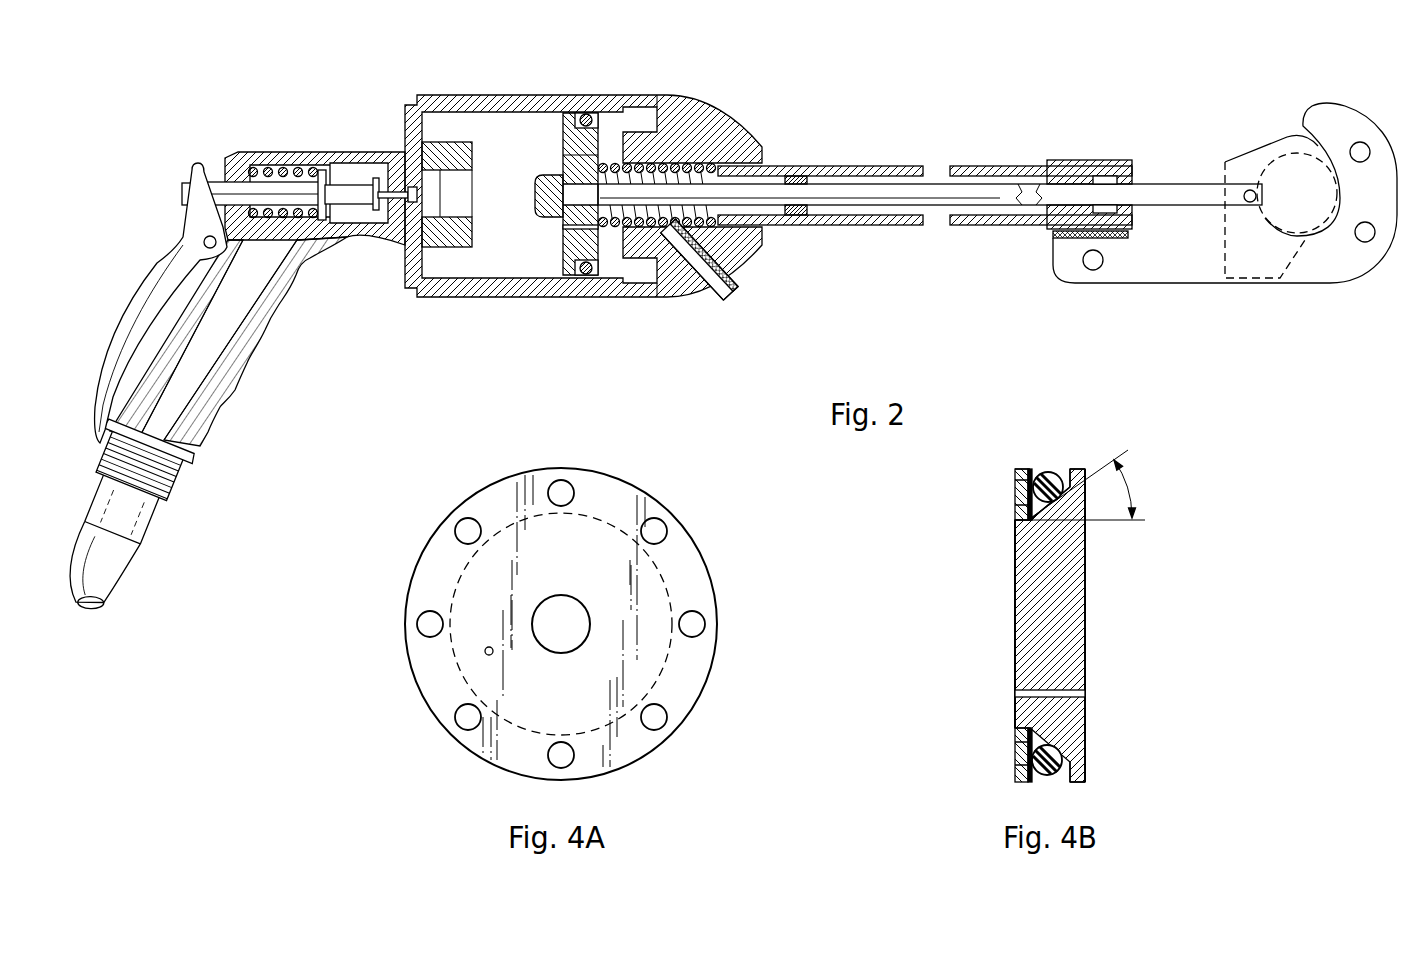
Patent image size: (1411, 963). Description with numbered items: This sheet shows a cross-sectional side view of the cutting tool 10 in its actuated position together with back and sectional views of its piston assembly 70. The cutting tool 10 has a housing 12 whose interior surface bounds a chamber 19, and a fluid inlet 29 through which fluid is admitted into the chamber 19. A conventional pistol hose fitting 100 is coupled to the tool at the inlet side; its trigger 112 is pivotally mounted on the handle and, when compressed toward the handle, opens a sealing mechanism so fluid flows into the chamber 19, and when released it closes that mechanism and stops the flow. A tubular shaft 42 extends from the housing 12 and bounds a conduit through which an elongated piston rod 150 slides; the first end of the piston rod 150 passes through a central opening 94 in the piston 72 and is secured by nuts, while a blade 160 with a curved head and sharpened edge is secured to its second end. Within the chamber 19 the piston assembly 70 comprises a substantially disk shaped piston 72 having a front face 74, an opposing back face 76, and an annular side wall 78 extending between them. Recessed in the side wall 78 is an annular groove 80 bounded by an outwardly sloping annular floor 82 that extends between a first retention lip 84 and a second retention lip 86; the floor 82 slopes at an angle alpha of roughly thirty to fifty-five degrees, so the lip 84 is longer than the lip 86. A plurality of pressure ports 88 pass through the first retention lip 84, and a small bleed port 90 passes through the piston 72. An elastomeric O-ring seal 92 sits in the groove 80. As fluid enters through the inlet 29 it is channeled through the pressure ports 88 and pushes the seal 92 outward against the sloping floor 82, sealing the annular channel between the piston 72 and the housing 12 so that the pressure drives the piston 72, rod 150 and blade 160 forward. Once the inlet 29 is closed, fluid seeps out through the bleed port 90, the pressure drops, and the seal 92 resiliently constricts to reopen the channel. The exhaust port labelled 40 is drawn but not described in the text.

In FIG. 2, the cutting tool 10 is at (717, 320).
In FIG. 2, the housing 12 is at (532, 97).
In FIG. 2, the chamber 19 is at (480, 258).
In FIG. 2, the fluid inlet 29 is at (457, 177).
In FIG. 2, the exhaust port 40 is at (707, 272).
In FIG. 2, the tubular shaft 42 is at (867, 227).
In FIG. 4A, the piston assembly 70 is at (586, 594).
In FIG. 4B, the piston assembly 70 is at (1061, 587).
In FIG. 2, the piston 72 is at (568, 172).
In FIG. 4A, the piston 72 is at (561, 624).
In FIG. 4B, the piston 72 is at (1068, 645).
In FIG. 4B, the front face 74 is at (1015, 597).
In FIG. 4B, the back face 76 is at (1088, 576).
In FIG. 4B, the annular side wall 78 is at (1072, 478).
In FIG. 4B, the annular groove 80 is at (1062, 475).
In FIG. 4B, the sloping annular floor 82 is at (1015, 512).
In FIG. 4B, the first retention lip 84 is at (1015, 477).
In FIG. 4B, the second retention lip 86 is at (1088, 468).
In FIG. 4A, the pressure ports 88 is at (565, 490).
In FIG. 4B, the pressure ports 88 is at (1015, 496).
In FIG. 2, the bleed port 90 is at (565, 228).
In FIG. 4A, the bleed port 90 is at (485, 651).
In FIG. 4B, the bleed port 90 is at (1015, 694).
In FIG. 2, the seal 92 is at (583, 280).
In FIG. 4B, the seal 92 is at (1046, 472).
In FIG. 4A, the central opening 94 is at (540, 623).
In FIG. 2, the pistol hose fitting 100 is at (280, 393).
In FIG. 2, the trigger 112 is at (137, 292).
In FIG. 2, the piston rod 150 is at (880, 192).
In FIG. 2, the blade 160 is at (1257, 158).